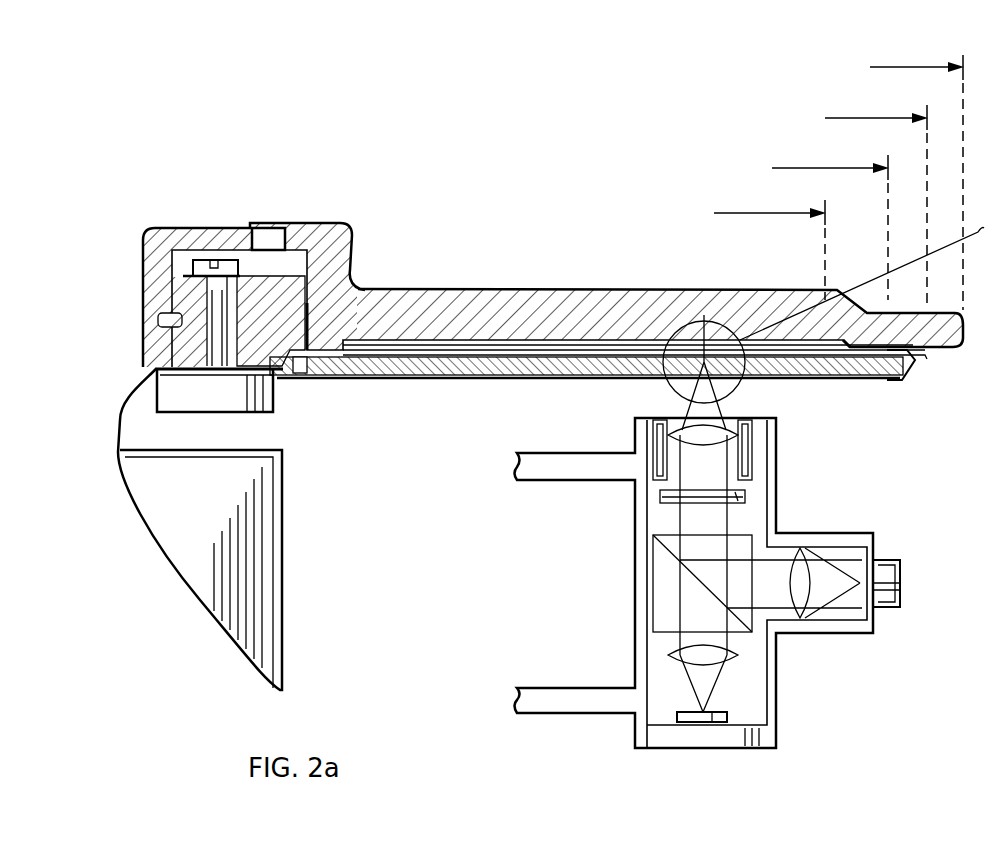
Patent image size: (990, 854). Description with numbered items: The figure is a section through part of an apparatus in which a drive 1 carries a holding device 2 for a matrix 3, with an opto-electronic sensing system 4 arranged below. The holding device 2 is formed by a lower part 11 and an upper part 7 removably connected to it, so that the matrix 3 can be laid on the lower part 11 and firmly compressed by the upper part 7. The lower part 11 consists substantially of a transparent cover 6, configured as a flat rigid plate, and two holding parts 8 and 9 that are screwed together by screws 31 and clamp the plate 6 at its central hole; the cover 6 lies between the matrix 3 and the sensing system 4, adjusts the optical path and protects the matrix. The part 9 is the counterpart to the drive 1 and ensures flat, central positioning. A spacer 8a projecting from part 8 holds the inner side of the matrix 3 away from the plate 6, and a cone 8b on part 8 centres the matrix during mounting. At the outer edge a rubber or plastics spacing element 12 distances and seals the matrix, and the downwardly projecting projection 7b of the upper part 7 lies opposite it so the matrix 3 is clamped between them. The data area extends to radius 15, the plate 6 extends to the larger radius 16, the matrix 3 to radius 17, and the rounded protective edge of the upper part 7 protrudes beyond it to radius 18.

The drive 1 is at (268, 567).
The holding device 2 is at (363, 281).
The matrix 3 is at (428, 347).
The opto-electronic sensing system 4 is at (790, 513).
The transparent cover 6 is at (468, 373).
The upper part 7 is at (655, 292).
The projection 7b is at (330, 335).
The holding part 8 is at (258, 281).
The spacer 8a is at (357, 287).
The cone 8b is at (305, 300).
The holding part 9 is at (290, 378).
The lower part 11 is at (322, 395).
The spacing element 12 is at (910, 378).
The radius of the data area 15 is at (780, 212).
The external radius of the plate 16 is at (842, 167).
The radius of the matrix 17 is at (895, 117).
The radius of the upper part 18 is at (900, 67).
The screws 31 is at (213, 323).